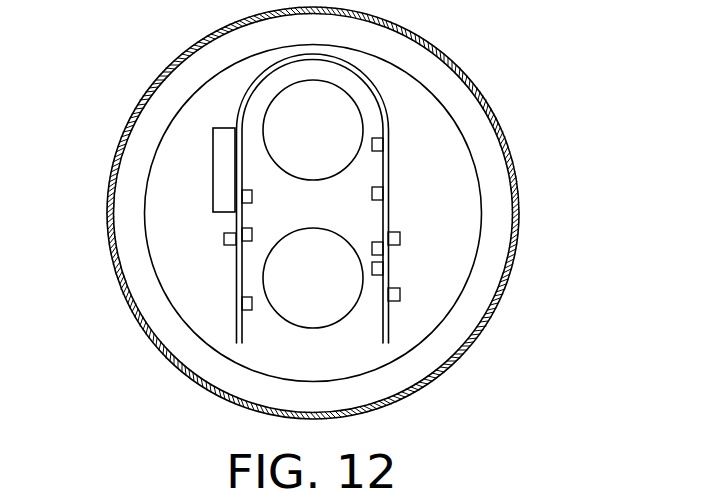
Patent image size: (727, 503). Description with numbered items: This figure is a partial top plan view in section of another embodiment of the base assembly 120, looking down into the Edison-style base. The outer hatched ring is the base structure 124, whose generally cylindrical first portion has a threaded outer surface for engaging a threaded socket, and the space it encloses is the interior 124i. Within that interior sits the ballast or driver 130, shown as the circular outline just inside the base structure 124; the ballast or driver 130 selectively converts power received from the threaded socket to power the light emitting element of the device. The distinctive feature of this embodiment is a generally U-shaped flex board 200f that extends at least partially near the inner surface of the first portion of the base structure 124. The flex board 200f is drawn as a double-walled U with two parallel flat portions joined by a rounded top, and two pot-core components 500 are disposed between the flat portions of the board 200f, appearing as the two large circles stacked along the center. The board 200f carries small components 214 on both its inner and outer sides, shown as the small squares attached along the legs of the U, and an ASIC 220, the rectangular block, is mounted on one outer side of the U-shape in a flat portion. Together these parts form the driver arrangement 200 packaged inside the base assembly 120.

The base assembly 120 is at (323, 216).
The base structure 124 is at (518, 270).
The interior 124i is at (176, 279).
The ballast or driver 130 is at (488, 219).
The sensor assembly 200 is at (354, 210).
The U-shaped flex board 200f is at (390, 117).
The components 214 is at (224, 239).
The ASIC 220 is at (213, 183).
The pot-core components 500 is at (327, 144).